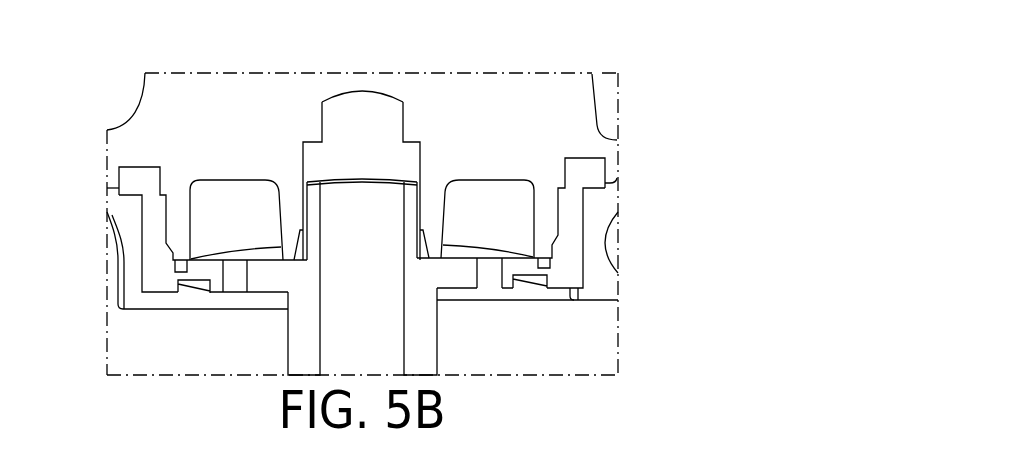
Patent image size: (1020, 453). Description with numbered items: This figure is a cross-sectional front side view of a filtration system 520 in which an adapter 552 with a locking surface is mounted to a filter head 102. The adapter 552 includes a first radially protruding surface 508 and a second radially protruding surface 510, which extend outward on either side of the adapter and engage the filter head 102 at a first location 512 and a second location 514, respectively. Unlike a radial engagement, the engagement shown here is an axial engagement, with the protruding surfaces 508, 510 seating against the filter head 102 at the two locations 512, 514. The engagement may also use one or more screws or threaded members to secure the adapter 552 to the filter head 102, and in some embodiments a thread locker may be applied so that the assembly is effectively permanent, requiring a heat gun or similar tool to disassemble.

The filter head 102 is at (628, 90).
The filtration system 520 is at (105, 45).
The first radially protruding surface 508 is at (153, 167).
The second radially protruding surface 510 is at (577, 157).
The first location 512 is at (124, 206).
The second location 514 is at (592, 199).
The adapter 552 is at (596, 274).